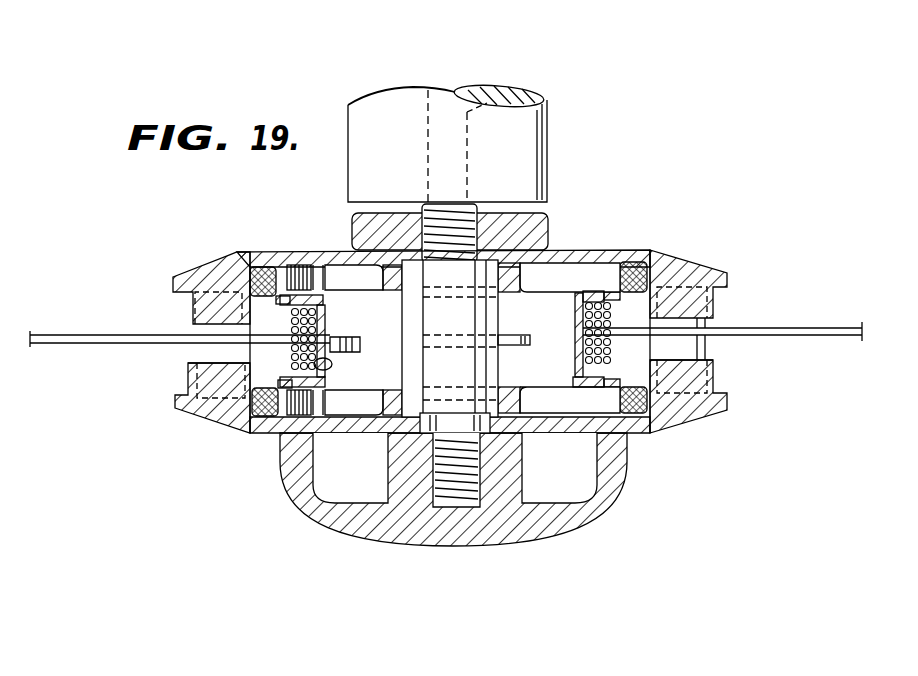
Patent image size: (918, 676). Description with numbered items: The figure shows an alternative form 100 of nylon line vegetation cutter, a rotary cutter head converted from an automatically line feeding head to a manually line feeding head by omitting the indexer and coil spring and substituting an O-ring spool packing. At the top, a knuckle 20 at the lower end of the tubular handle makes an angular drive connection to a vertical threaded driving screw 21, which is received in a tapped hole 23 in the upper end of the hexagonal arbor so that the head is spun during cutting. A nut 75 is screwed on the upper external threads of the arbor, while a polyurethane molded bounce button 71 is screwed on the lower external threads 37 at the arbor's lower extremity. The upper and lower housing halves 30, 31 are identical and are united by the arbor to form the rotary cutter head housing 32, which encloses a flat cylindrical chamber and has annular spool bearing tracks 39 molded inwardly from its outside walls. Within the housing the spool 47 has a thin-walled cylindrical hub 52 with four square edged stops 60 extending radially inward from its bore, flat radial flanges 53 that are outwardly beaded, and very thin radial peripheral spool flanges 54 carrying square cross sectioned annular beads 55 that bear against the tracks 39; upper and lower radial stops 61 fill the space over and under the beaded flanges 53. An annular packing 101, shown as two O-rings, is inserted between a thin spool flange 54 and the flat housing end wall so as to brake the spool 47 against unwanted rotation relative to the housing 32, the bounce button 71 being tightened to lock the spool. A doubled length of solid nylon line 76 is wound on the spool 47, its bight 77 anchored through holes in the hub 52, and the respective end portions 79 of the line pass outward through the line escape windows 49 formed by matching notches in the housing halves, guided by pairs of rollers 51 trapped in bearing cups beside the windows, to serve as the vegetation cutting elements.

The knuckle 20 is at (545, 122).
The vertical threaded driving screw 21 is at (498, 96).
The tapped hole 23 is at (442, 210).
The nut 75 is at (512, 217).
The upper housing half 30 is at (298, 250).
The lower housing half 31 is at (262, 434).
The rotary cutter head housing 32 is at (176, 412).
The spool 47 is at (242, 288).
The flat radial flange 53 is at (594, 252).
The thin radial peripheral spool flange 54 is at (650, 416).
The alternative form of nylon line vegetation cutter 100 is at (738, 260).
The annular bead 55 is at (270, 268).
The spool bearing track 39 is at (630, 261).
The annular packing 101 is at (258, 280).
The radial stop 61 is at (318, 270).
The cylindrical hub 52 is at (558, 433).
The square edged stop 60 is at (560, 338).
The solid nylon line 76 is at (290, 327).
The bight 77 is at (333, 365).
The roller 51 is at (200, 334).
The end portion of the line 79 is at (52, 343).
The line escape window 49 is at (205, 355).
The bounce button 71 is at (547, 527).
The lower external thread 37 is at (458, 472).